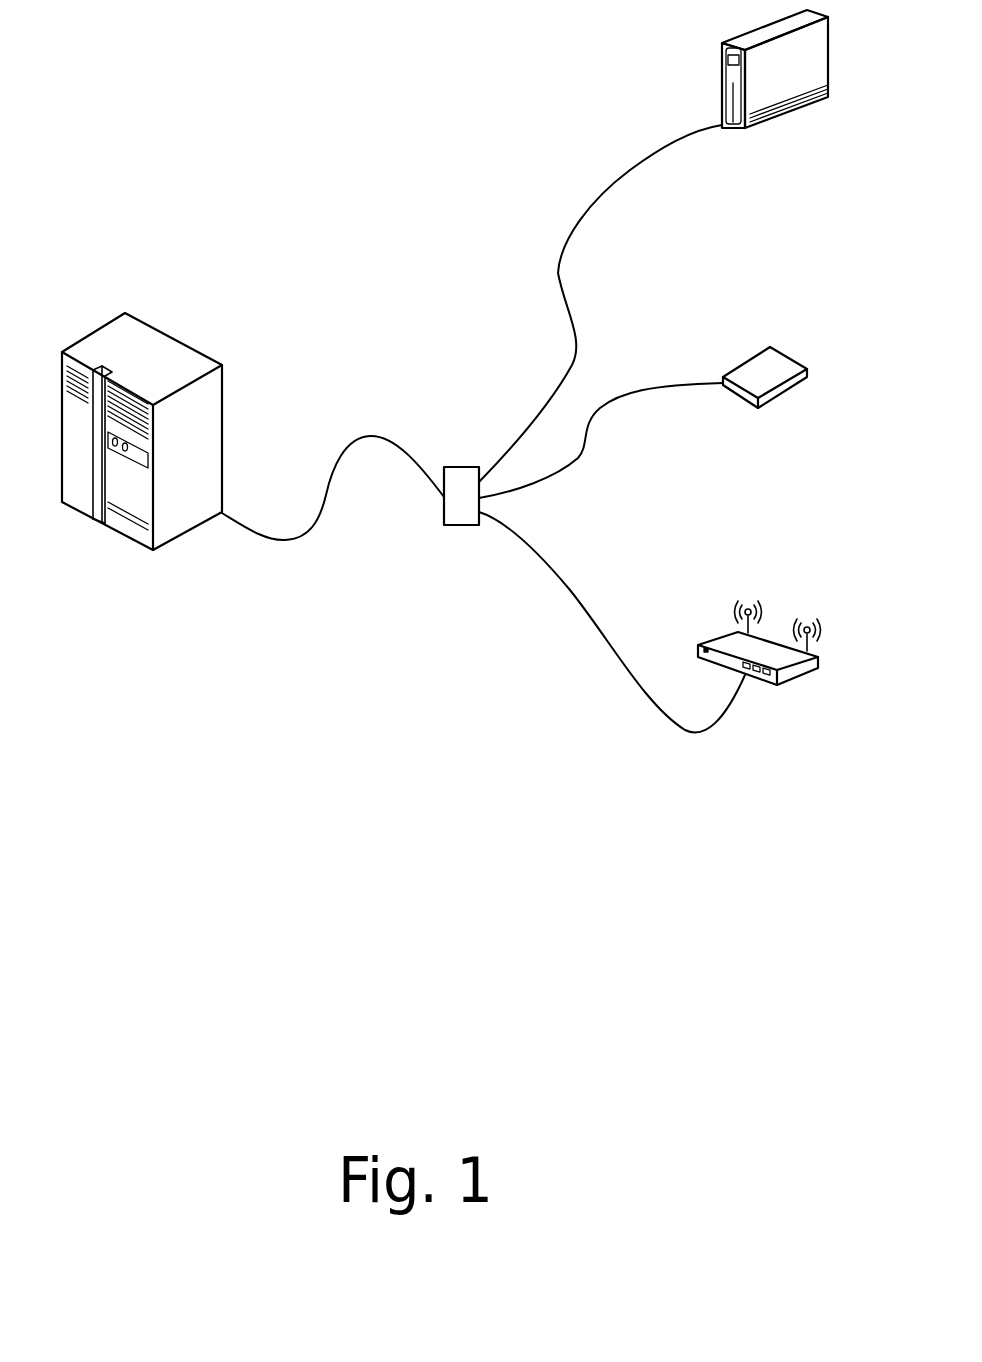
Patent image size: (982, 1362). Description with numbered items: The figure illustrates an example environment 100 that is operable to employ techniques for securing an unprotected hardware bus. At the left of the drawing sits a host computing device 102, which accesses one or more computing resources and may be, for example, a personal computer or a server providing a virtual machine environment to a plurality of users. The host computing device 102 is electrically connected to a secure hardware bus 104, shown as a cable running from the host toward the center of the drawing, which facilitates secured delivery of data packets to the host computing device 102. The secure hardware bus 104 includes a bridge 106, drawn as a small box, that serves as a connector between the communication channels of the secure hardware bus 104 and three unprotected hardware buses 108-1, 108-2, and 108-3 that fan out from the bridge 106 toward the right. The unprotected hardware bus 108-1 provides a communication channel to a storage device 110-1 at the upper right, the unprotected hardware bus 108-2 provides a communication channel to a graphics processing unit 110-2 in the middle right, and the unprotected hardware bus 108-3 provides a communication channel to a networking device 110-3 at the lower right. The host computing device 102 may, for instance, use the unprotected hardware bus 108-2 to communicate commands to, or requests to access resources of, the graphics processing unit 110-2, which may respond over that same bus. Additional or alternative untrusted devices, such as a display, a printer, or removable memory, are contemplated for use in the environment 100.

The environment 100 is at (165, 144).
The host computing device 102 is at (158, 609).
The secure hardware bus 104 is at (355, 437).
The bridge 106 is at (460, 467).
The unprotected hardware bus 108-1 is at (558, 273).
The unprotected hardware bus 108-2 is at (570, 470).
The unprotected hardware bus 108-3 is at (577, 597).
The storage device 110-1 is at (788, 192).
The graphics processing unit 110-2 is at (788, 458).
The networking device 110-3 is at (790, 742).